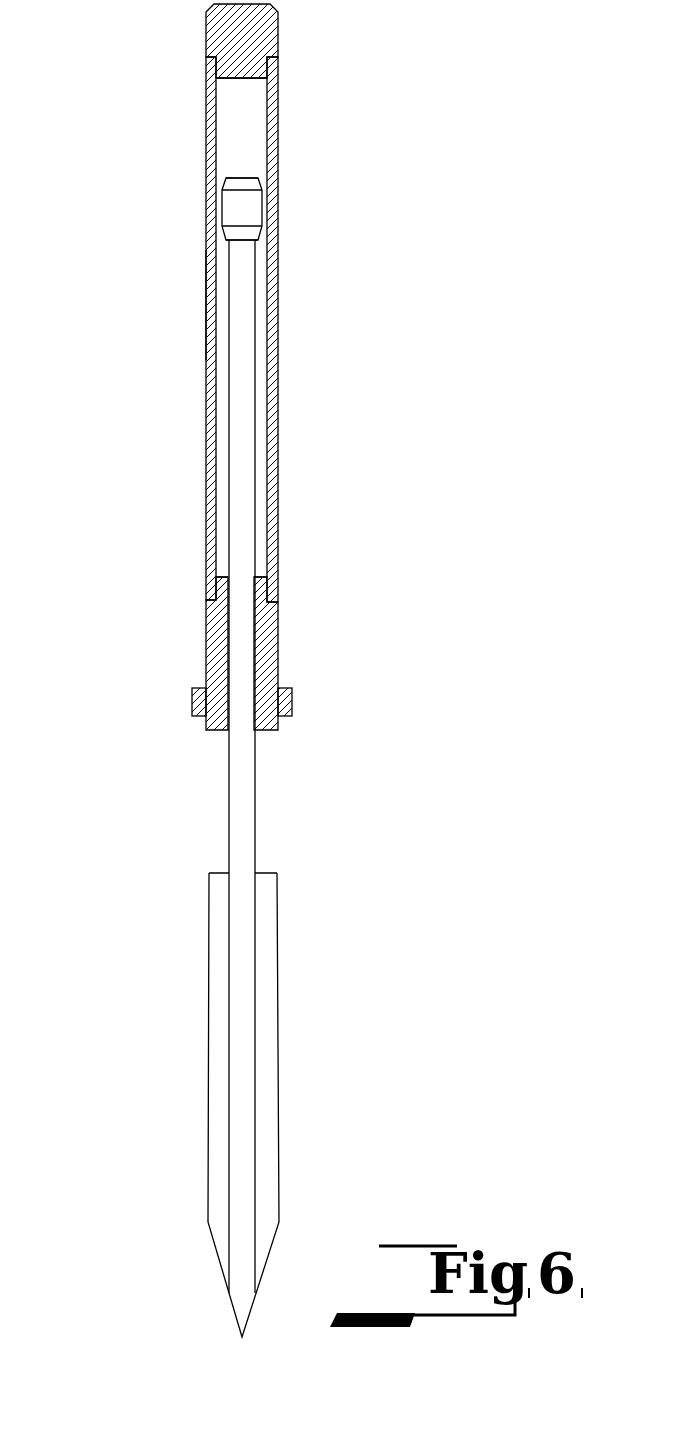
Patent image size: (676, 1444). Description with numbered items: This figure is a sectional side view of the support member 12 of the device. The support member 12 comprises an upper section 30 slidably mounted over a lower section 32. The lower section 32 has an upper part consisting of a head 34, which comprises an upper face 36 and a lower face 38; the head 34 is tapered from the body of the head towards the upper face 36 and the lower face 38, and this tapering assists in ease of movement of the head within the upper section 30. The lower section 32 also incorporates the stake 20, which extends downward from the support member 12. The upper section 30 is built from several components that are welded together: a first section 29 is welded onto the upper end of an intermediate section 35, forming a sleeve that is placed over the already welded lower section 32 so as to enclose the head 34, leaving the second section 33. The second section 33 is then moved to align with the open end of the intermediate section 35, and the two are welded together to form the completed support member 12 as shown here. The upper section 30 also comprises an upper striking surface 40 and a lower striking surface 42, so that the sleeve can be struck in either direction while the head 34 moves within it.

The support member 12 is at (184, 45).
The stake 20 is at (266, 1048).
The first section 29 is at (262, 32).
The upper section 30 is at (278, 415).
The lower section 32 is at (244, 810).
The second section 33 is at (270, 655).
The head 34 is at (232, 210).
The intermediate section 35 is at (208, 305).
The upper face 36 is at (242, 178).
The lower face 38 is at (256, 242).
The upper striking surface 40 is at (258, 80).
The lower striking surface 42 is at (265, 577).